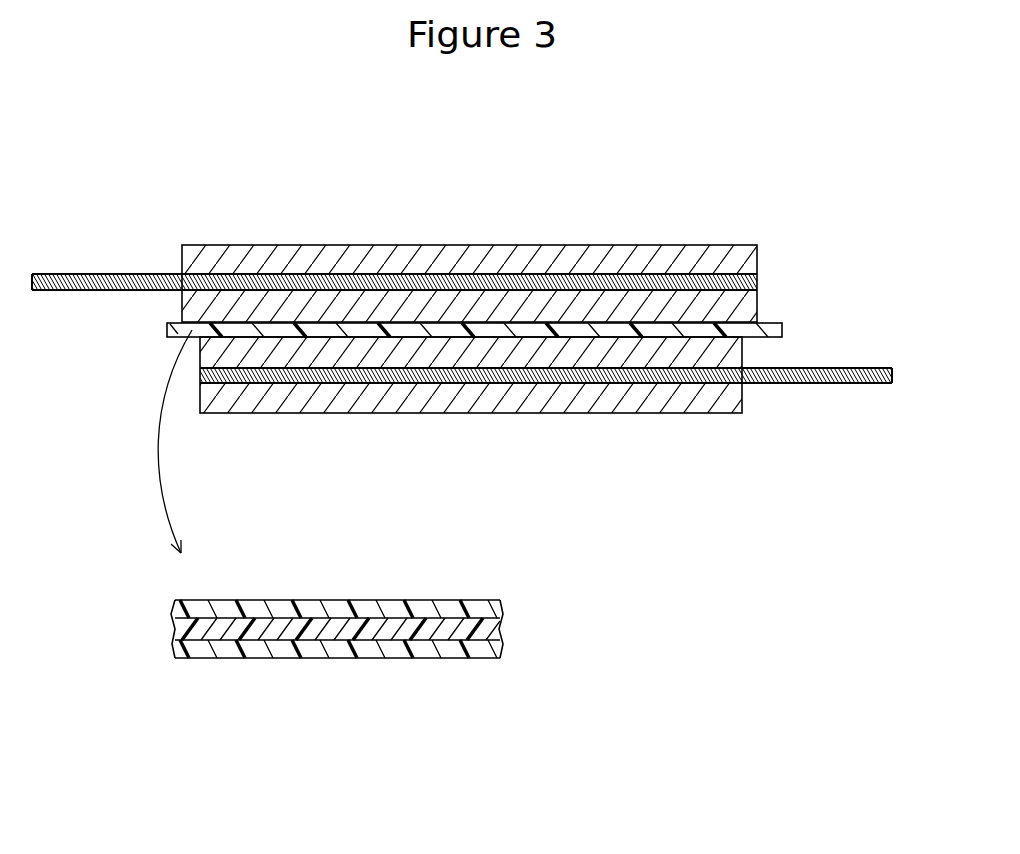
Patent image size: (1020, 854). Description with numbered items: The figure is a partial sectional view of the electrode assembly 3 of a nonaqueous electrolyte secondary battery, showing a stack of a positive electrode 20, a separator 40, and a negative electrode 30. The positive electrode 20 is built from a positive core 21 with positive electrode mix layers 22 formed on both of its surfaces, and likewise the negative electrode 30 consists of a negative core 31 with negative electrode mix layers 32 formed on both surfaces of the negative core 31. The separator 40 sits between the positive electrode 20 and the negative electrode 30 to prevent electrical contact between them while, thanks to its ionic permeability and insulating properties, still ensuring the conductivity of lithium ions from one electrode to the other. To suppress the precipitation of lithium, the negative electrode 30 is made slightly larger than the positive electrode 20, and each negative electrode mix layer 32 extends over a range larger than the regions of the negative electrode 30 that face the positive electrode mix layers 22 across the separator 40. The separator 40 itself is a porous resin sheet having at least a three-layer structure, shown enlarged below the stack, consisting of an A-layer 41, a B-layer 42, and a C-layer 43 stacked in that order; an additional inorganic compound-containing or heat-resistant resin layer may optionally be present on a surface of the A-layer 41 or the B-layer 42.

The electrode assembly 3 is at (766, 122).
The positive electrode 20 is at (744, 400).
The positive core 21 is at (493, 379).
The positive electrode mix layers 22 is at (400, 351).
The negative electrode 30 is at (759, 256).
The negative core 31 is at (470, 279).
The negative electrode mix layers 32 is at (363, 262).
The separator 40 is at (172, 328).
The A-layer 41 is at (340, 600).
The B-layer 42 is at (377, 632).
The C-layer 43 is at (432, 657).